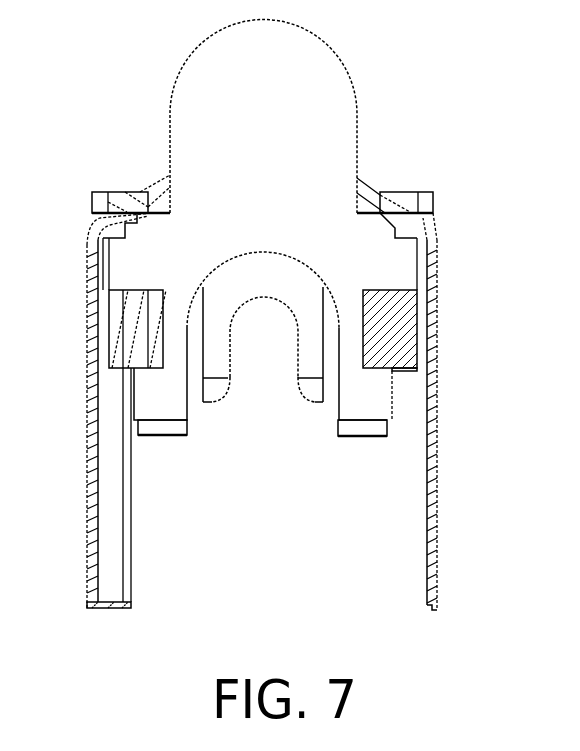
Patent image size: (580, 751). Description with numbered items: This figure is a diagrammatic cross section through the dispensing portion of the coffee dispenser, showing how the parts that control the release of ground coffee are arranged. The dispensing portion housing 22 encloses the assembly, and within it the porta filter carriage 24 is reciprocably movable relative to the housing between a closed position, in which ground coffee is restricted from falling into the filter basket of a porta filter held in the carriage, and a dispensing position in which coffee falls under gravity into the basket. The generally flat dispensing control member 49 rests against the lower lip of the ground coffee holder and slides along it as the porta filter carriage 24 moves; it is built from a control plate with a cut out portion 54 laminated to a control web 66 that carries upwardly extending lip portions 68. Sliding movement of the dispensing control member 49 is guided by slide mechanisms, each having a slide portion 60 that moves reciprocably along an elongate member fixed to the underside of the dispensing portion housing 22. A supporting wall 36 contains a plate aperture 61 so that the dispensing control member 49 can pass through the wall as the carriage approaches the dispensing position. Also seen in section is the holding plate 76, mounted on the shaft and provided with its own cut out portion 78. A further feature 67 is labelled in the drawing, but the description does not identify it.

The dispensing portion housing 22 is at (432, 373).
The porta filter carriage 24 is at (270, 450).
The supporting wall 36 is at (398, 200).
The dispensing control member 49 is at (305, 33).
The cut out portion 54 is at (188, 421).
The slide portion 60 is at (117, 302).
The plate aperture 61 is at (148, 206).
The control web 66 is at (333, 104).
The dome interior 67 is at (275, 114).
The upwardly extending lip portions 68 is at (153, 438).
The holding plate 76 is at (251, 270).
The cut out portion 78 is at (229, 364).